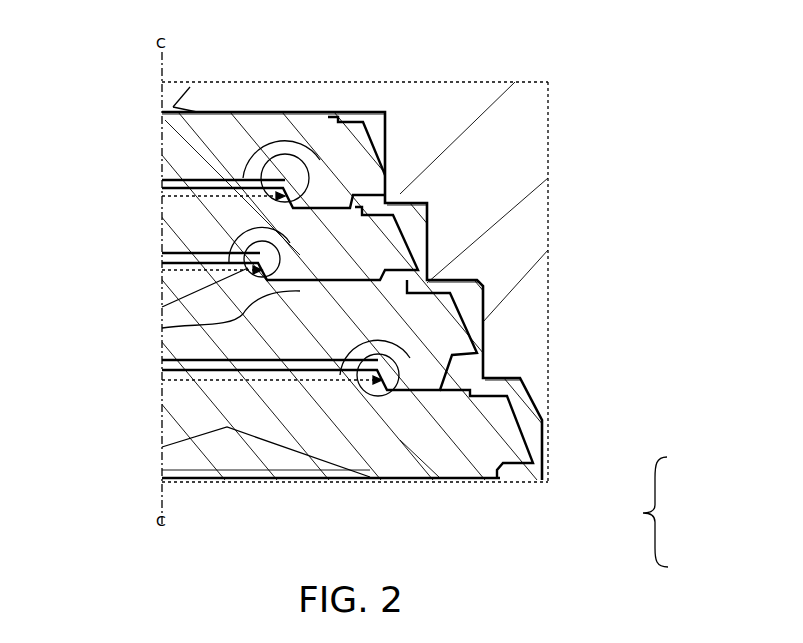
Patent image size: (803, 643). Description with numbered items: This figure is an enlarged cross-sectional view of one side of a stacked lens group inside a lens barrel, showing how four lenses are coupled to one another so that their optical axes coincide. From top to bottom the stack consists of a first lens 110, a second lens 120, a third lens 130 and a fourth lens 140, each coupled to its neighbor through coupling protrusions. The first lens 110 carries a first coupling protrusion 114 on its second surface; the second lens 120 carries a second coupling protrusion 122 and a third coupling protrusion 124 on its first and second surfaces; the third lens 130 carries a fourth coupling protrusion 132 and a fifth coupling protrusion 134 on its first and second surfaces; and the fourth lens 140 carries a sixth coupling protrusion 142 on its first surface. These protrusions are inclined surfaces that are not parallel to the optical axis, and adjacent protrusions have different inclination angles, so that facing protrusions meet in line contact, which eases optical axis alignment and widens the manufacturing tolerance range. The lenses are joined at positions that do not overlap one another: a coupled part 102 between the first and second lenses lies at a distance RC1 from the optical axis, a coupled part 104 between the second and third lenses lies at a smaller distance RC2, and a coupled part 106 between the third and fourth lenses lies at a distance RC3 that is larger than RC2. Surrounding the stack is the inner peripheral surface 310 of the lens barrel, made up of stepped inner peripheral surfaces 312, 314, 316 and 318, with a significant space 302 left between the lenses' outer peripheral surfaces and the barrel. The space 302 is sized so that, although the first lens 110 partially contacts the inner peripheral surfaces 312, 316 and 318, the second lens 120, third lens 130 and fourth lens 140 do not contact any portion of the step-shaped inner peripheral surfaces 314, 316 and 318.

The coupled part 102 is at (302, 110).
The coupled part 104 is at (162, 328).
The coupled part 106 is at (408, 480).
The first lens 110 is at (387, 132).
The first coupling protrusion 114 is at (290, 170).
The second lens 120 is at (427, 223).
The second coupling protrusion 122 is at (292, 198).
The third coupling protrusion 124 is at (175, 258).
The third lens 130 is at (483, 323).
The fourth coupling protrusion 132 is at (162, 307).
The fifth coupling protrusion 134 is at (395, 325).
The fourth lens 140 is at (541, 445).
The sixth coupling protrusion 142 is at (352, 385).
The space 302 is at (533, 395).
The inner peripheral surface 310 is at (657, 512).
The inner peripheral surface 312 is at (387, 118).
The inner peripheral surface 314 is at (427, 208).
The inner peripheral surface 316 is at (483, 307).
The inner peripheral surface 318 is at (541, 426).
The distance RC1 is at (163, 178).
The distance RC2 is at (240, 282).
The distance RC3 is at (162, 380).